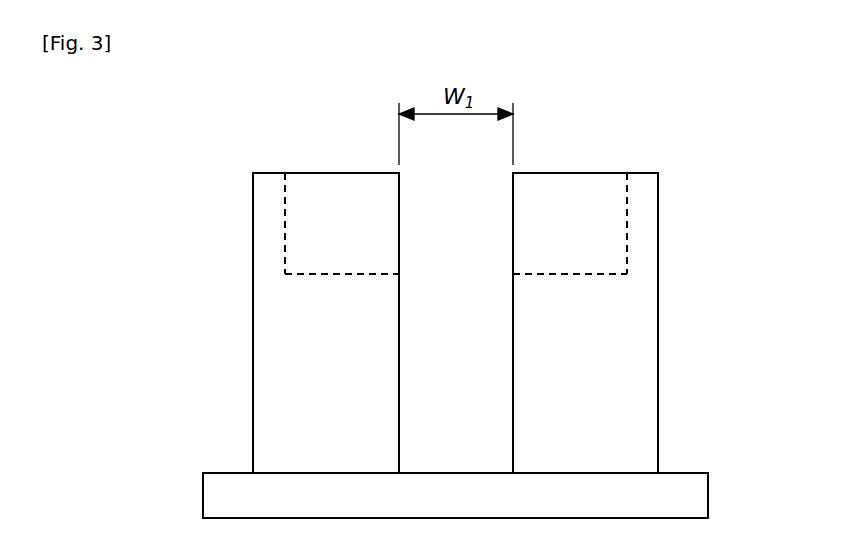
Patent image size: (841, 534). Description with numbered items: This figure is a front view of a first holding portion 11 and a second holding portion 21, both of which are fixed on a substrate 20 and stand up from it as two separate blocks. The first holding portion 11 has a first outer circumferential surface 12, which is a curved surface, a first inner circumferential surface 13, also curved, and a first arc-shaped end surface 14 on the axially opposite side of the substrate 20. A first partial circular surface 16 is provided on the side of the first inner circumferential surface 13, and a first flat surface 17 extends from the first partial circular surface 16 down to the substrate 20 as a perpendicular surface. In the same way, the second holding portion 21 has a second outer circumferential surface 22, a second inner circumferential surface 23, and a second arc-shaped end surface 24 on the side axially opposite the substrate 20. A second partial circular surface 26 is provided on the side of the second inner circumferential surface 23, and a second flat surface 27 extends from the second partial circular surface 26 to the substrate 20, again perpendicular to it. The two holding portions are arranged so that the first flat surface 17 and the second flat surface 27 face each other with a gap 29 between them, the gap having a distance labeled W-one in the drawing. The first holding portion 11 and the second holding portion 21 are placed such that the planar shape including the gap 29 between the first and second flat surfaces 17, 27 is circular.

The first holding portion 11 is at (350, 166).
The first outer circumferential surface 12 is at (253, 304).
The first inner circumferential surface 13 is at (287, 232).
The first arc-shaped end surface 14 is at (270, 173).
The first partial circular surface 16 is at (338, 272).
The first flat surface 17 is at (399, 402).
The substrate 20 is at (684, 471).
The second holding portion 21 is at (555, 166).
The second outer circumferential surface 22 is at (658, 313).
The second inner circumferential surface 23 is at (626, 232).
The second arc-shaped end surface 24 is at (646, 173).
The second partial circular surface 26 is at (560, 272).
The second flat surface 27 is at (513, 358).
The gap 29 is at (471, 444).